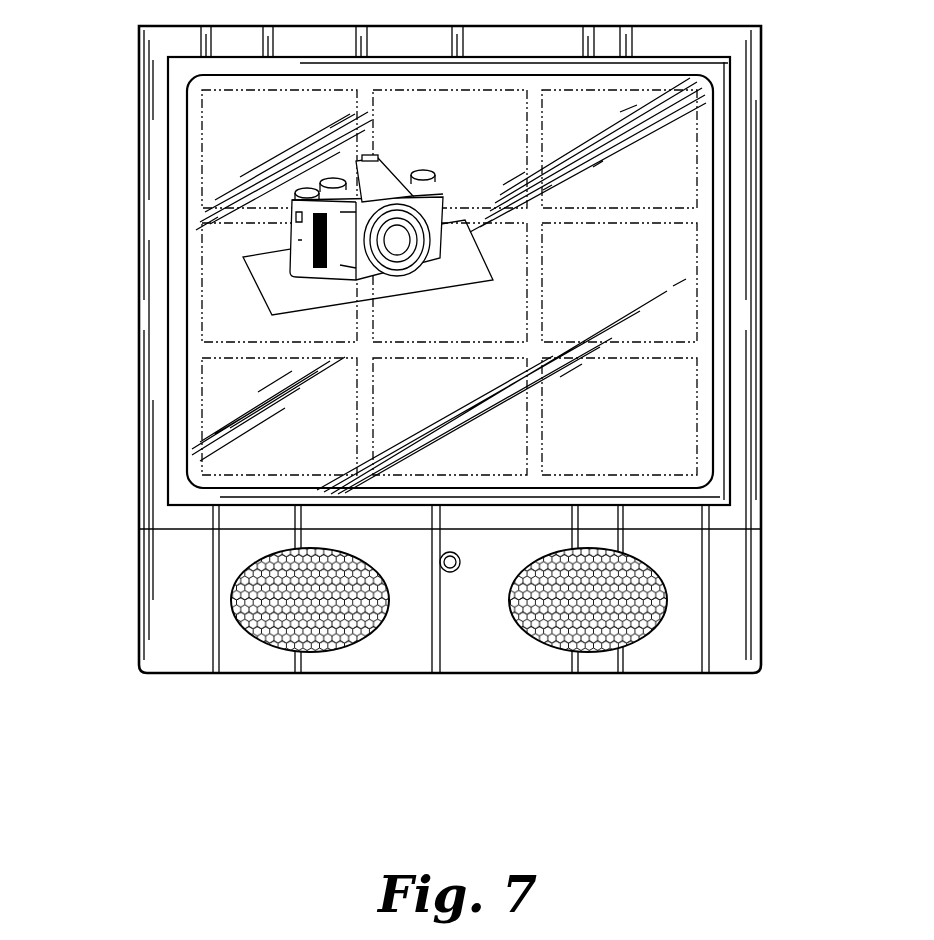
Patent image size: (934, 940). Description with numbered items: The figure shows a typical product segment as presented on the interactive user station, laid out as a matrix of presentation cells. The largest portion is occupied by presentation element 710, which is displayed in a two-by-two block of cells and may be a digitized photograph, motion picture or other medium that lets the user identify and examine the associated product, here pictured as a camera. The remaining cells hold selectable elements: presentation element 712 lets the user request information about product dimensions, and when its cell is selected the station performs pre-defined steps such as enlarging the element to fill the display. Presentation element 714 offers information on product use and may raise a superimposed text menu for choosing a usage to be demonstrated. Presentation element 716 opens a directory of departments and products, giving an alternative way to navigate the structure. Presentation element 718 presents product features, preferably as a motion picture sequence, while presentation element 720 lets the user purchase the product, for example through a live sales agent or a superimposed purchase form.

The presentation element 710 is at (212, 192).
The presentation element 712 is at (201, 398).
The presentation element 714 is at (409, 477).
The presentation element 716 is at (697, 383).
The presentation element 718 is at (697, 267).
The presentation element 720 is at (697, 145).